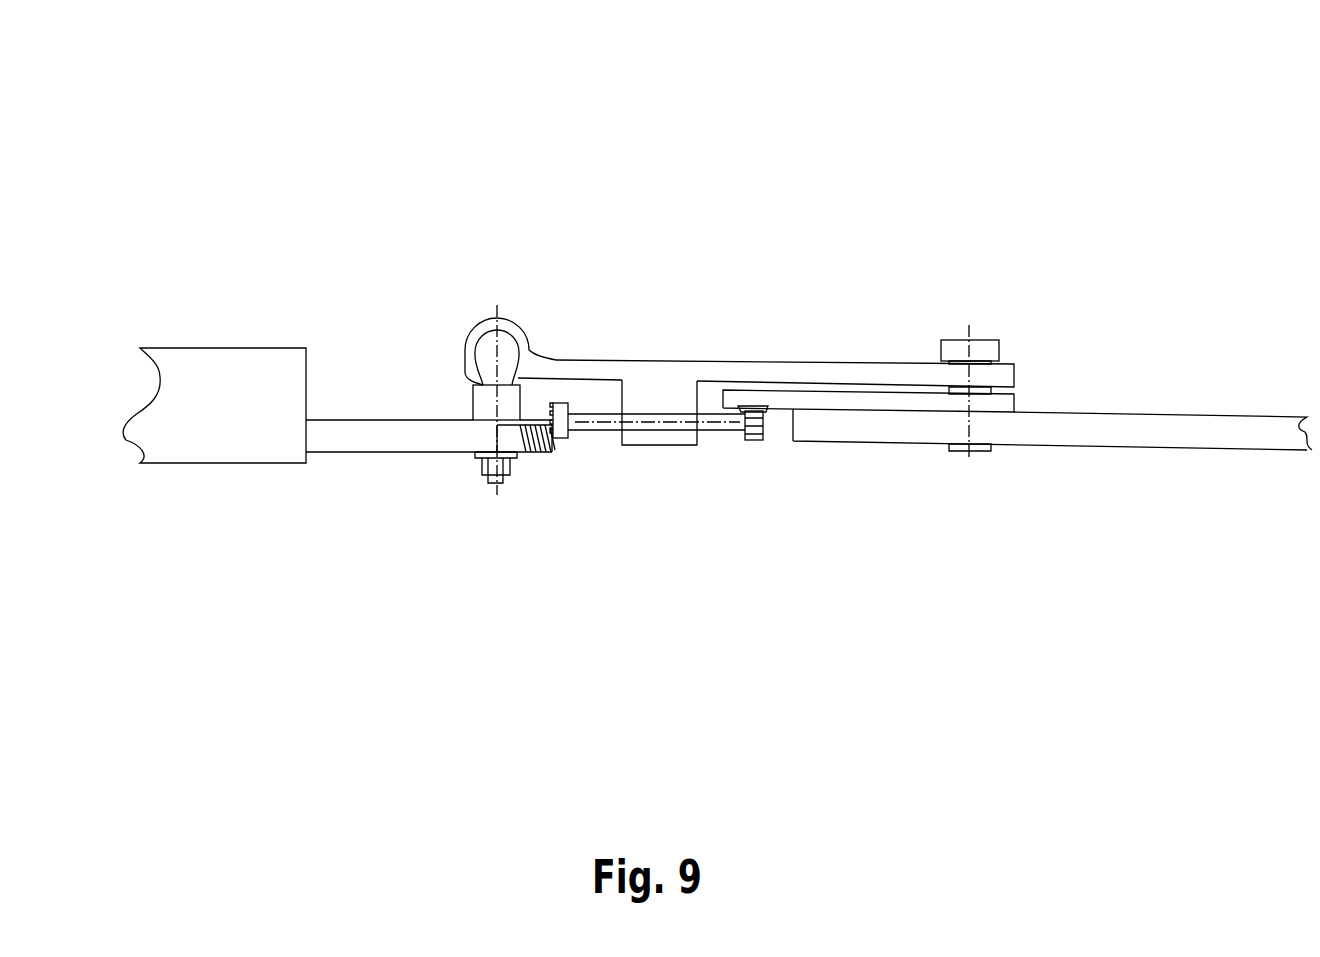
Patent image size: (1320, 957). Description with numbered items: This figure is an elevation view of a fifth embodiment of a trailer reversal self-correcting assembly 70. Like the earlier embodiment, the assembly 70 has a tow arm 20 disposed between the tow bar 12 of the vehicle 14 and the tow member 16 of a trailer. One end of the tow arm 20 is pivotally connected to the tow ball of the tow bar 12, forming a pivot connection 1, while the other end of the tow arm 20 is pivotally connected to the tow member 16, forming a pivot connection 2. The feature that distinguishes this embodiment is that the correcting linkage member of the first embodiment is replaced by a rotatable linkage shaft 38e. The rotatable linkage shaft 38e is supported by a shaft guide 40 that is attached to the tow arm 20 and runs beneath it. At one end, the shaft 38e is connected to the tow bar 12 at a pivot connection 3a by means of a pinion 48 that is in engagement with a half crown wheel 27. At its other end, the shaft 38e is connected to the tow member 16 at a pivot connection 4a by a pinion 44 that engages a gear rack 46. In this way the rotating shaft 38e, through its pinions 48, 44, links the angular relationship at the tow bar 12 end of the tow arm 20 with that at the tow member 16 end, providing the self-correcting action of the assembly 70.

The trailer reversal self-correcting assembly 70 is at (521, 181).
The vehicle 14 is at (240, 378).
The tow bar 12 is at (390, 430).
The pivot connection 1 is at (497, 353).
The half crown wheel 27 is at (553, 450).
The pinion 48 is at (556, 408).
The pivot connection 3a is at (580, 430).
The rotatable linkage shaft 38e is at (717, 427).
The shaft guide 40 is at (654, 442).
The pinion 44 is at (758, 440).
The pivot connection 4a is at (766, 428).
The gear rack 46 is at (740, 407).
The tow arm 20 is at (803, 375).
The pivot connection 2 is at (965, 345).
The tow member 16 is at (1178, 428).